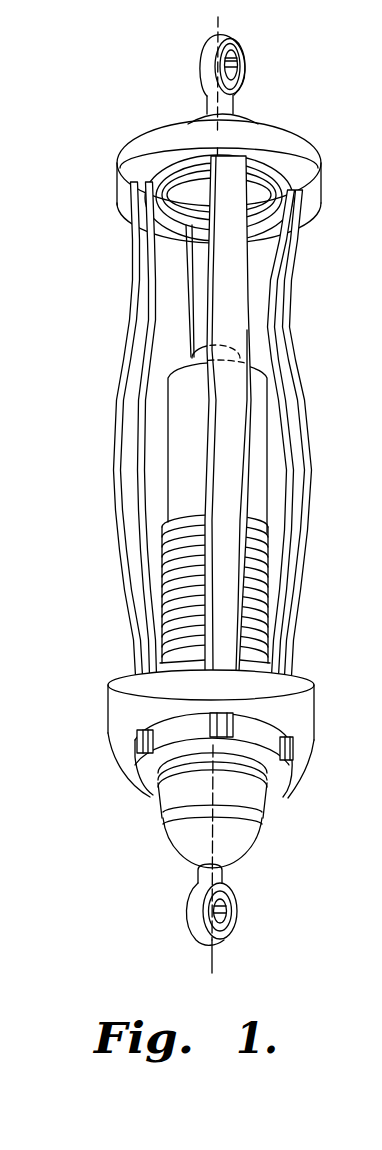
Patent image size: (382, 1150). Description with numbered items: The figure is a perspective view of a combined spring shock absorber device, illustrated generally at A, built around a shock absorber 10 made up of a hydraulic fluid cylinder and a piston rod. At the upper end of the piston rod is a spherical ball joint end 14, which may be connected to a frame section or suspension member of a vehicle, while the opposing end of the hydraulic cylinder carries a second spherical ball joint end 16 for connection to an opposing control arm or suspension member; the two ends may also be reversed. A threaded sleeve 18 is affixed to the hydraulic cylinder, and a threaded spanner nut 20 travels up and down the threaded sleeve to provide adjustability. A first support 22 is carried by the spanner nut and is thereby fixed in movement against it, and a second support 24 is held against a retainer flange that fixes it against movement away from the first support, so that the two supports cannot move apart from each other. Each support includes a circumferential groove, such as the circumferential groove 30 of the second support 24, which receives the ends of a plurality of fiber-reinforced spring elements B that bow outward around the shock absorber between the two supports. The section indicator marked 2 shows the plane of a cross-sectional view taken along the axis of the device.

The section line 2- 2 is at (218, 17).
The shock absorber 10 is at (257, 443).
The spherical ball joint end 14 is at (246, 66).
The second spherical ball joint end 16 is at (235, 927).
The threaded sleeve 18 is at (258, 613).
The threaded spanner nut 20 is at (122, 765).
The first support 22 is at (300, 697).
The second support 24 is at (121, 165).
The circumferential groove 30 is at (140, 238).
The combined spring shock absorber device A is at (116, 559).
The fiber-reinforced spring elements B is at (183, 306).